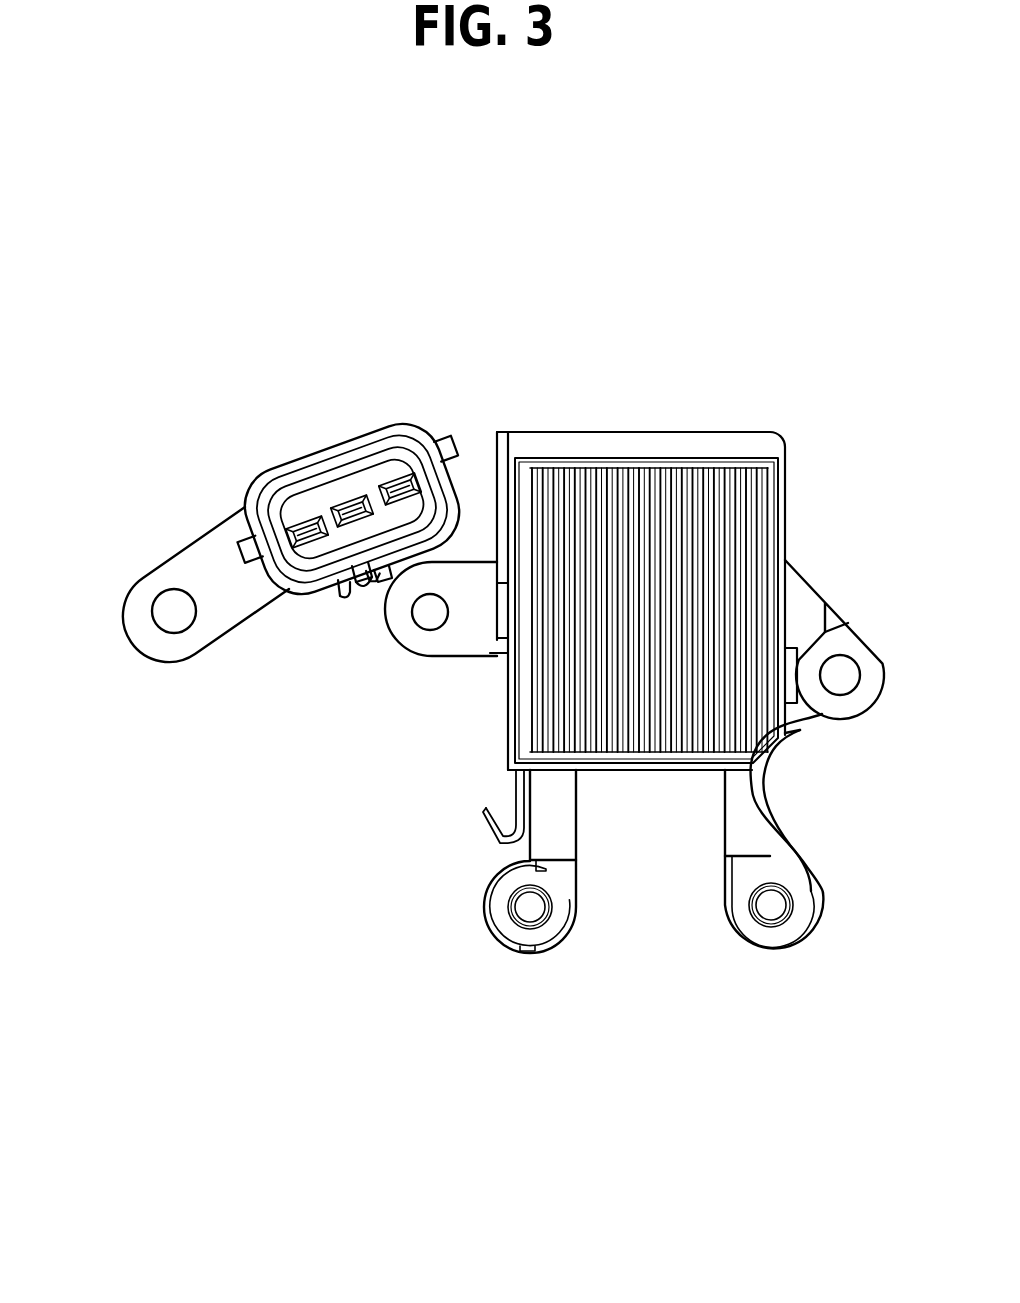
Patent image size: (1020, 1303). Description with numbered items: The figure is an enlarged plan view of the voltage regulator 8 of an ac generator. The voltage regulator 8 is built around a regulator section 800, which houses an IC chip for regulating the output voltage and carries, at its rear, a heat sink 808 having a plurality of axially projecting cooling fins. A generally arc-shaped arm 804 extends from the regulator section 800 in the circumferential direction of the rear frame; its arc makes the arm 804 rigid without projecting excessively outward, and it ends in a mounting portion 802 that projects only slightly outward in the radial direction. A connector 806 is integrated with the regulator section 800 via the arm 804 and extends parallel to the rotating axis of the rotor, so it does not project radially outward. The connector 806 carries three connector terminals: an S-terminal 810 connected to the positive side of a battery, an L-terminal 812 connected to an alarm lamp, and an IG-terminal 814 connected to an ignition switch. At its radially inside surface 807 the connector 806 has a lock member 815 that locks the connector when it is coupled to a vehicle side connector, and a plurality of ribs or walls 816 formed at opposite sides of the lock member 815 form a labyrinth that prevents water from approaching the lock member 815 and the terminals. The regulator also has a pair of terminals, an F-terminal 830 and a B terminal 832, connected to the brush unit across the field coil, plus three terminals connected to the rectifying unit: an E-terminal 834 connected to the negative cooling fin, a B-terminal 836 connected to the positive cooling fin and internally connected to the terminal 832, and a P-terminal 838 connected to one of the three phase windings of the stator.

The voltage regulator 8 is at (545, 298).
The regulator section 800 is at (622, 443).
The mounting portion 802 is at (153, 630).
The arm 804 is at (202, 553).
The connector 806 is at (398, 422).
The radially inside surface 807 is at (357, 577).
The heat sink 808 is at (697, 520).
The S-terminal 810 is at (300, 525).
The L-terminal 812 is at (345, 500).
The IG-terminal 814 is at (382, 488).
The lock member 815 is at (372, 578).
The ribs or walls 816 is at (462, 450).
The F-terminal 830 is at (508, 927).
The B terminal 832 is at (757, 932).
The E-terminal 834 is at (460, 633).
The B-terminal 836 is at (847, 703).
The P-terminal 838 is at (487, 828).